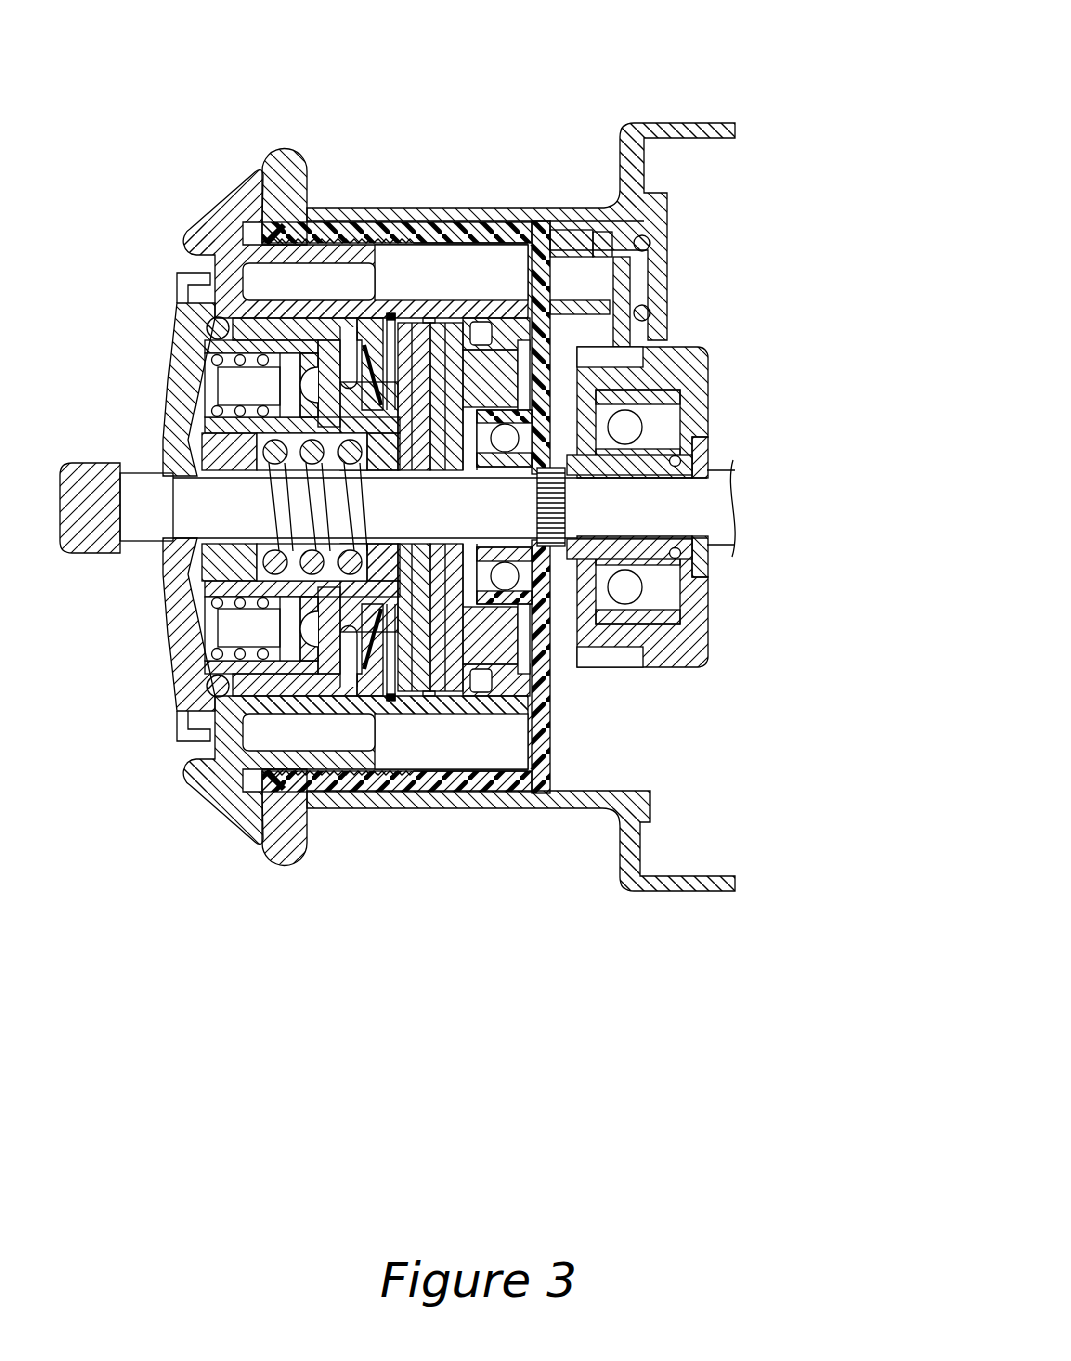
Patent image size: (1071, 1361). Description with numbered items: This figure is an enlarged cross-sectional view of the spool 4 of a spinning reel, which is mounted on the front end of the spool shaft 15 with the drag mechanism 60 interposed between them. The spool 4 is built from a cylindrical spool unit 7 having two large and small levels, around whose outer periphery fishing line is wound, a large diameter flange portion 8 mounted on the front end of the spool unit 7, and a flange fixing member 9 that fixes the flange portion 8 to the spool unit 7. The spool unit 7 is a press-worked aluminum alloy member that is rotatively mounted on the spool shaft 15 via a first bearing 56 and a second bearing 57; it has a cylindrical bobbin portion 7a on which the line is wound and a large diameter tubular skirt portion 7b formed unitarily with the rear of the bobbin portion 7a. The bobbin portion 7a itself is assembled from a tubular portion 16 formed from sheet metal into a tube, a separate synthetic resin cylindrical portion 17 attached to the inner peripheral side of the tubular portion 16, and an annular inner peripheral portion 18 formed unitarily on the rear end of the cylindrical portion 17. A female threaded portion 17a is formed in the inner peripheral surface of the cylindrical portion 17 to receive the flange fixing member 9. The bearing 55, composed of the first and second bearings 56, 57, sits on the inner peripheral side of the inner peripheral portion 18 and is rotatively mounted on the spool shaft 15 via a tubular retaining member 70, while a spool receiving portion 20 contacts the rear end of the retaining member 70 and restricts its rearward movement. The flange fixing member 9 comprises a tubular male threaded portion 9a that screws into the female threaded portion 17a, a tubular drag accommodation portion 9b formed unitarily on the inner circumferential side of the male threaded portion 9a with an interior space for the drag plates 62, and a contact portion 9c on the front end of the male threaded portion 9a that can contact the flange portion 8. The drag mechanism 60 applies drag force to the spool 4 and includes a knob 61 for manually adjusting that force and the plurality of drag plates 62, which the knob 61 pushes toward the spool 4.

The spool 4 is at (435, 519).
The spool unit 7 is at (549, 453).
The bobbin portion 7a is at (552, 220).
The skirt portion 7b is at (706, 130).
The flange portion 8 is at (283, 165).
The flange fixing member 9 is at (335, 470).
The male threaded portion 9a is at (284, 250).
The drag accommodation portion 9b is at (322, 308).
The contact portion 9c is at (196, 235).
The spool shaft 15 is at (625, 523).
The tubular portion 16 is at (375, 208).
The cylindrical portion 17 is at (532, 260).
The female threaded portion 17a is at (404, 318).
The inner peripheral portion 18 is at (540, 270).
The spool receiving portion 20 is at (705, 445).
The bearing 55 is at (592, 685).
The first bearing 56 is at (505, 578).
The second bearing 57 is at (628, 592).
The drag mechanism 60 is at (333, 702).
The knob 61 is at (187, 685).
The drag plates 62 is at (411, 704).
The retaining member 70 is at (565, 548).